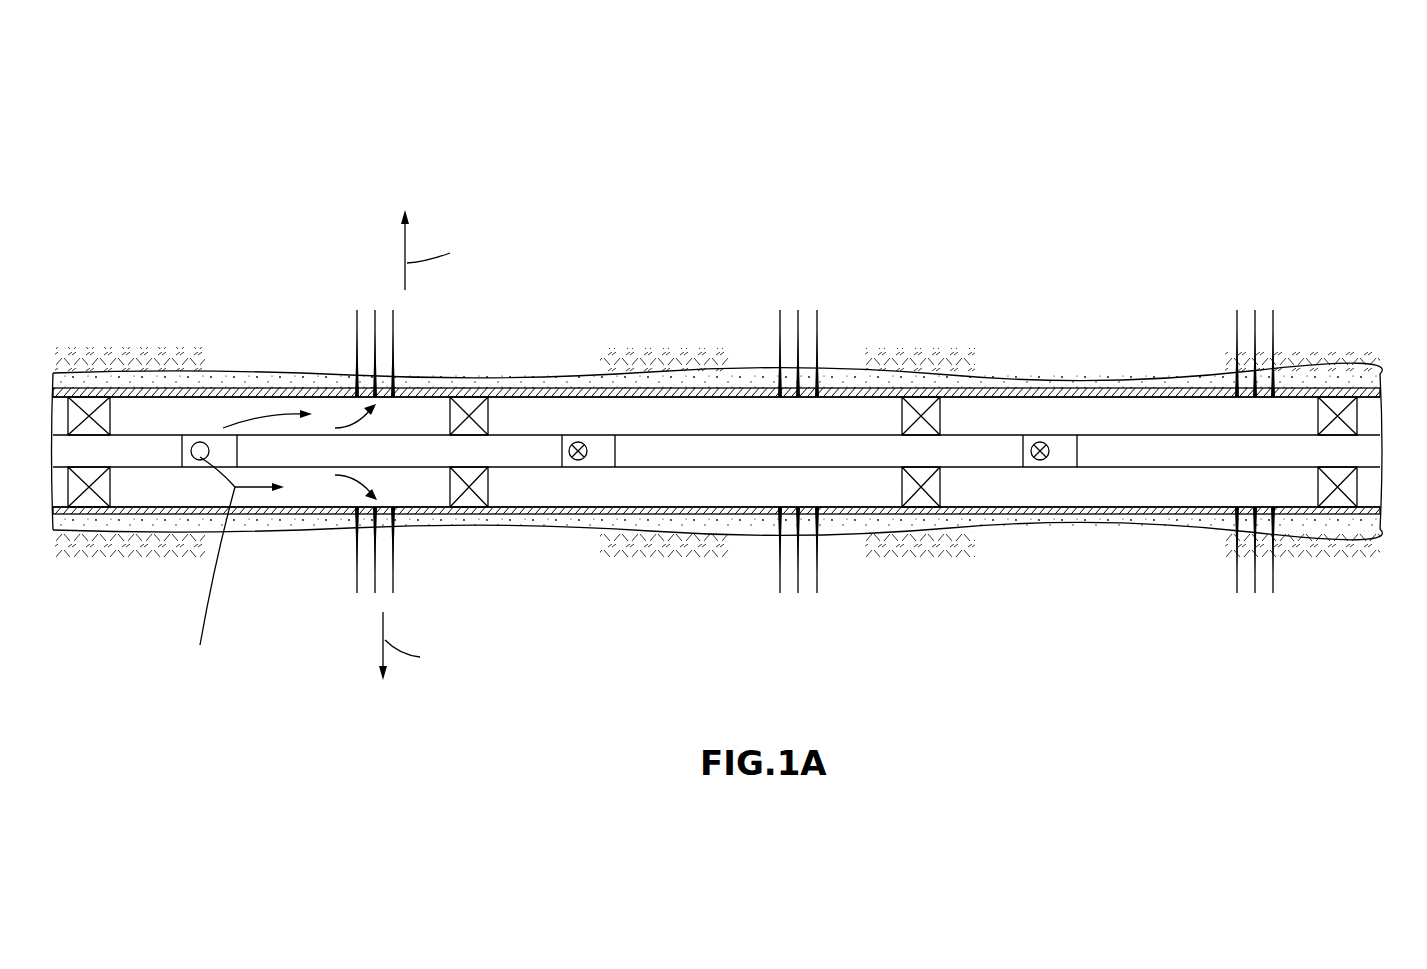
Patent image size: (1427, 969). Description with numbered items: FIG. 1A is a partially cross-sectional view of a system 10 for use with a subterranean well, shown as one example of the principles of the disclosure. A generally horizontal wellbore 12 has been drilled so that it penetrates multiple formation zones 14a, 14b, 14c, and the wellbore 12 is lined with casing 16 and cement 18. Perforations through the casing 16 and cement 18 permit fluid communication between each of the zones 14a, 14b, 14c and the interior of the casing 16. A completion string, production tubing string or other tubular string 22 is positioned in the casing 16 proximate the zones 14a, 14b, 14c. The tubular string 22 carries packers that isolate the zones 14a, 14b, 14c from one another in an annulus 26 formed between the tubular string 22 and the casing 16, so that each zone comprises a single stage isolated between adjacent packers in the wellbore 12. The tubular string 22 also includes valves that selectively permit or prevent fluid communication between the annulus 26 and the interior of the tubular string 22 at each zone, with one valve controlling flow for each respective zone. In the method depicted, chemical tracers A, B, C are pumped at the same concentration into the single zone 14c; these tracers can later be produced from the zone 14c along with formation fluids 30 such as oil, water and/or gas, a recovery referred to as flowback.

The system 10 is at (1252, 130).
The wellbore 12 is at (640, 497).
The formation zone 14a is at (1257, 295).
The formation zone 14b is at (790, 300).
The formation zone 14c is at (384, 303).
The casing 16 is at (1173, 530).
The cement 18 is at (1093, 530).
The tubular string 22 is at (1130, 425).
The annulus 26 is at (514, 422).
The formation fluids 30 is at (355, 655).